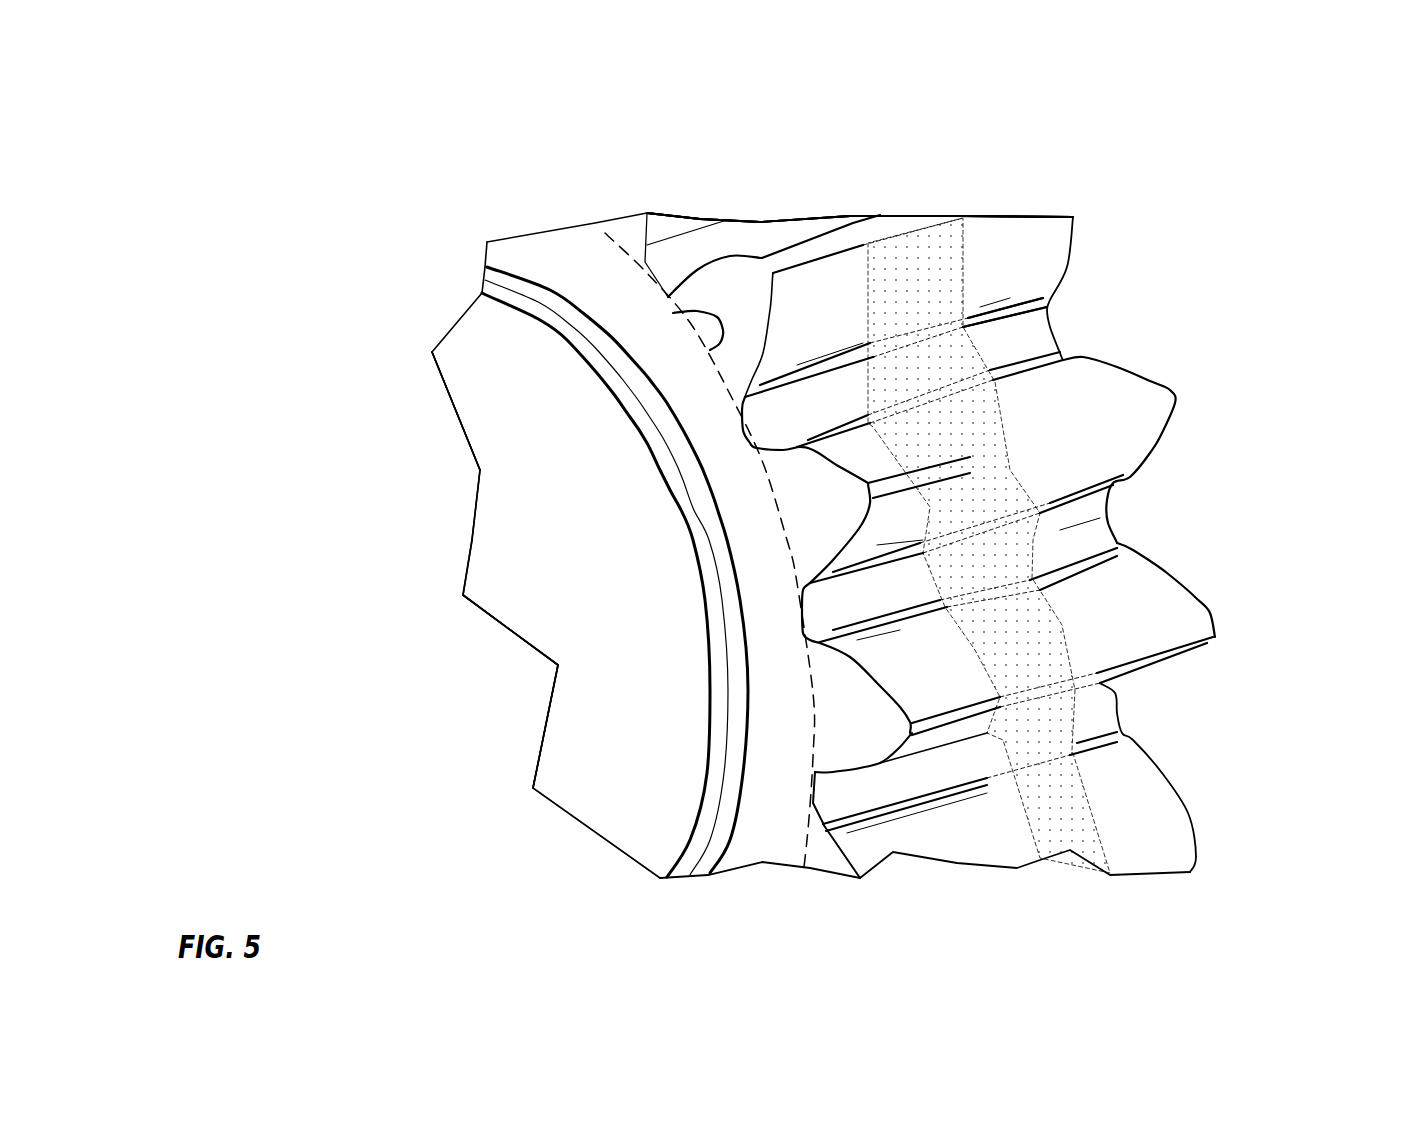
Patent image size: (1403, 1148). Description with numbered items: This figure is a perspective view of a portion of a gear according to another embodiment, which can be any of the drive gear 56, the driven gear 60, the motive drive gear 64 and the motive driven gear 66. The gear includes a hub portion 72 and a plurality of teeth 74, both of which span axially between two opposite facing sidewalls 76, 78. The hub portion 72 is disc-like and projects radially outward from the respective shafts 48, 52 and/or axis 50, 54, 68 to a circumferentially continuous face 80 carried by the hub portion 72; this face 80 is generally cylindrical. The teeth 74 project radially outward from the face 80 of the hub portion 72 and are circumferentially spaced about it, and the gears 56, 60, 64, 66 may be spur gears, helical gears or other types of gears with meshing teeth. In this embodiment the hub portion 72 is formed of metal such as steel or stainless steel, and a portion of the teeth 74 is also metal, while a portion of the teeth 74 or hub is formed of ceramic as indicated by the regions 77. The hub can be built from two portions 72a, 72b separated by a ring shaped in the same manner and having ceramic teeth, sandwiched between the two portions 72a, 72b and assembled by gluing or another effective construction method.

The shaft 48 is at (500, 425).
The shaft 52 is at (456, 411).
The axis 50 is at (1402, 362).
The axis 54 is at (510, 630).
The axis 68 is at (545, 726).
The drive gear 56 is at (1245, 290).
The driven gear 60 is at (860, 217).
The motive drive gear 64 is at (860, 217).
The motive driven gear 66 is at (860, 217).
The hub portion 72 is at (700, 407).
The hub portion 72a is at (587, 280).
The hub portion 72b is at (1030, 340).
The teeth 74 is at (1140, 378).
The sidewall 76 is at (773, 688).
The regions 77 is at (1077, 813).
The sidewall 78 is at (1167, 577).
The face 80 is at (700, 307).